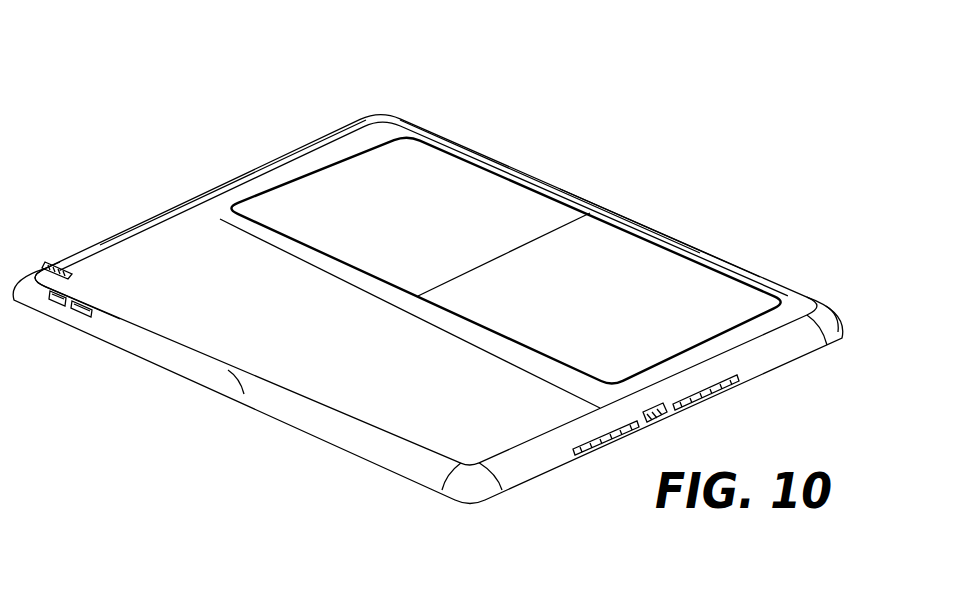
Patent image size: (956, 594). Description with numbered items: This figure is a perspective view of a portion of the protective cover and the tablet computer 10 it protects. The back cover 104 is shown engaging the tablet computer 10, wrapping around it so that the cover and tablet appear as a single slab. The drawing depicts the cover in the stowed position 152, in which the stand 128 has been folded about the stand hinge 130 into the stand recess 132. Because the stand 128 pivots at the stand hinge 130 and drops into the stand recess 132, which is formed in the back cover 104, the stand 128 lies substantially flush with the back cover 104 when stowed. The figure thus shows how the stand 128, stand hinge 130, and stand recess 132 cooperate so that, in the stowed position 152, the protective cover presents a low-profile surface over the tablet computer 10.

The tablet computer 10 is at (204, 218).
The back cover 104 is at (103, 240).
The stand 128 is at (268, 191).
The stand hinge 130 is at (410, 131).
The stand recess 132 is at (507, 196).
The stowed position 152 is at (673, 186).